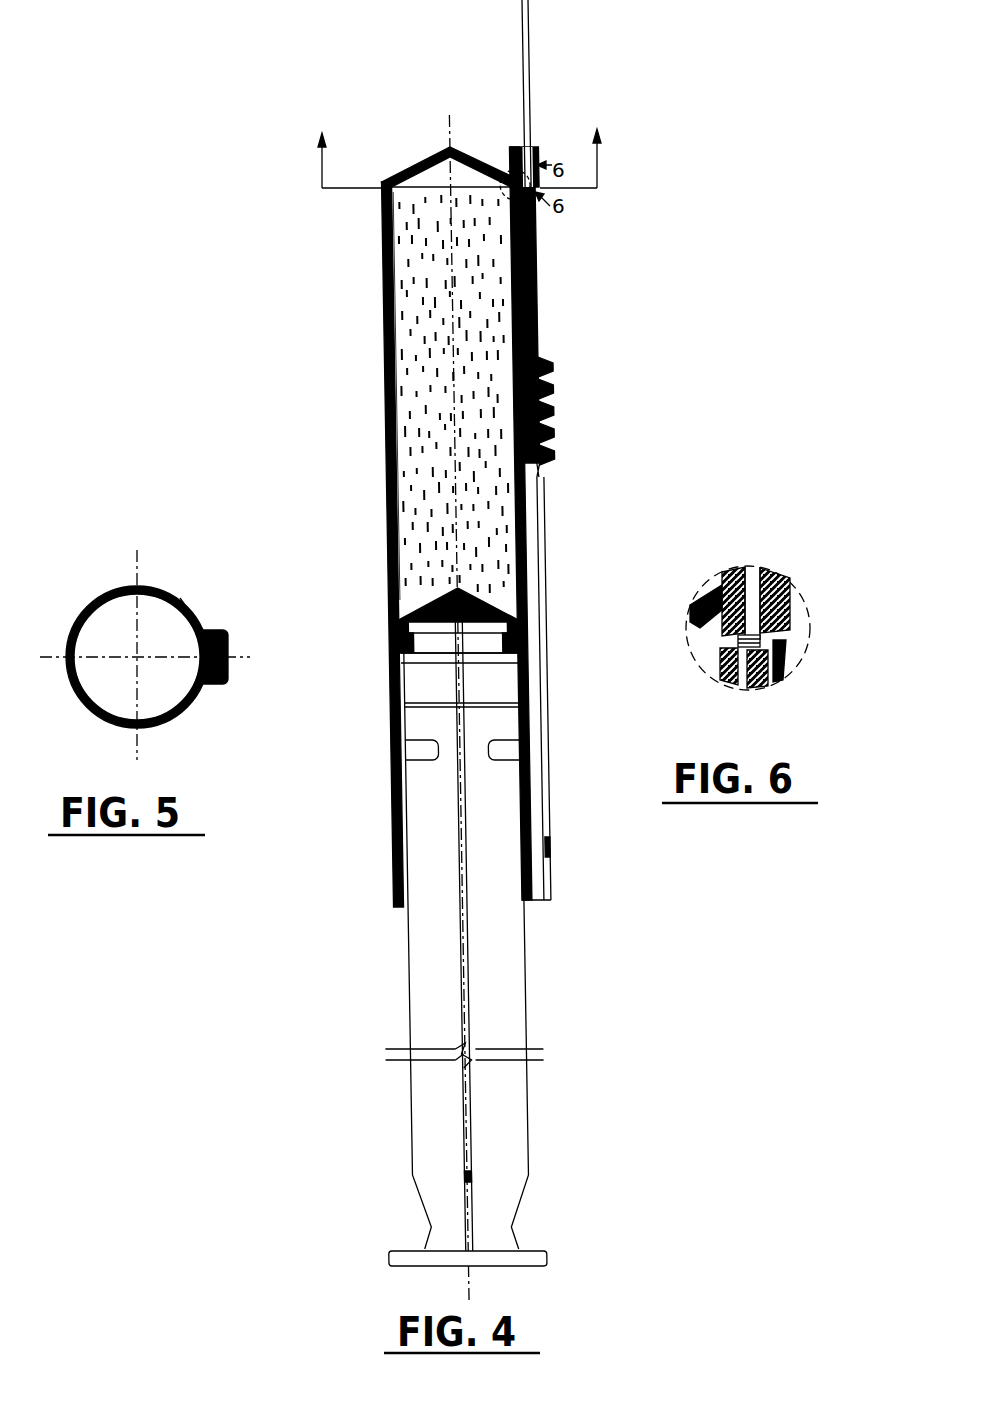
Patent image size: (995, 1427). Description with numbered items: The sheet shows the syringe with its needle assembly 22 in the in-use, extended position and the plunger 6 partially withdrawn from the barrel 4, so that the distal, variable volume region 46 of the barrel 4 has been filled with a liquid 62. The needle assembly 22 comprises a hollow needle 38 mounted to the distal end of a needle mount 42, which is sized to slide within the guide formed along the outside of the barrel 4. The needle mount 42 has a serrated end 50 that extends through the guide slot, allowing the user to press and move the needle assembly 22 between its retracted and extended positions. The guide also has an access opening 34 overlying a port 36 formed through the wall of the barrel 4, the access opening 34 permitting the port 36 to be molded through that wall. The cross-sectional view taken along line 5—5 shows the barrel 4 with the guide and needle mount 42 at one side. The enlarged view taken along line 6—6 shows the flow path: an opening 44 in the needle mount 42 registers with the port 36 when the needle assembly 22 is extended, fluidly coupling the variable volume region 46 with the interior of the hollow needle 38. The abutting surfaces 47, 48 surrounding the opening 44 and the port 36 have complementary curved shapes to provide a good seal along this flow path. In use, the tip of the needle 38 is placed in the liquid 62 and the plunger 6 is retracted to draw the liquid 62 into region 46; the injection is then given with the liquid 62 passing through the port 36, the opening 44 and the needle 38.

In FIG. 4, the barrel 4 is at (466, 527).
In FIG. 5, the barrel 4 is at (184, 652).
In FIG. 4, the section line 5— 5 is at (457, 158).
In FIG. 4, the plunger 6 is at (523, 1001).
In FIG. 4, the needle assembly 22 is at (515, 185).
In FIG. 5, the access opening 34 is at (230, 660).
In FIG. 6, the port 36 is at (735, 643).
In FIG. 4, the hollow needle 38 is at (498, 625).
In FIG. 4, the needle mount 42 is at (530, 543).
In FIG. 5, the needle mount 42 is at (230, 646).
In FIG. 6, the opening 44 is at (766, 645).
In FIG. 4, the distal variable volume region 46 is at (454, 394).
In FIG. 6, the abutting surface 47 is at (745, 660).
In FIG. 6, the abutting surface 48 is at (757, 628).
In FIG. 4, the serrated end 50 is at (546, 411).
In FIG. 4, the liquid 62 is at (396, 396).